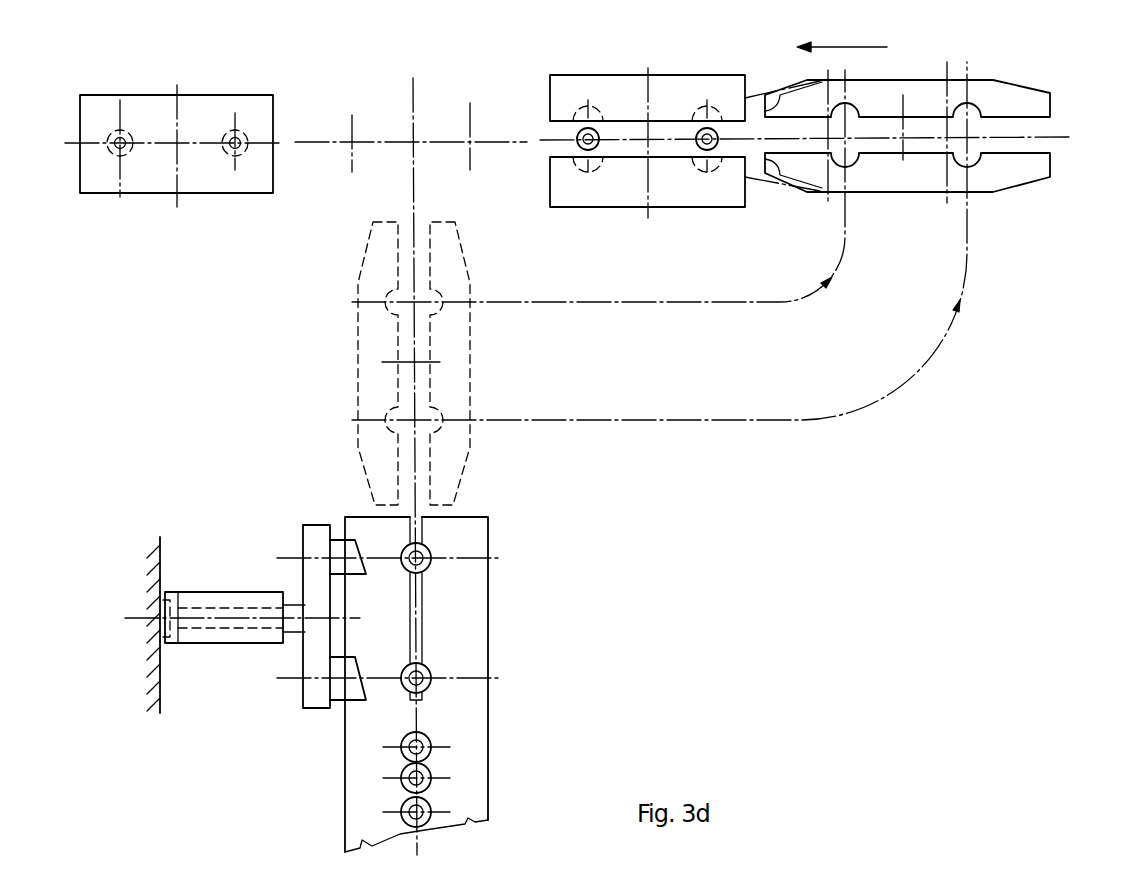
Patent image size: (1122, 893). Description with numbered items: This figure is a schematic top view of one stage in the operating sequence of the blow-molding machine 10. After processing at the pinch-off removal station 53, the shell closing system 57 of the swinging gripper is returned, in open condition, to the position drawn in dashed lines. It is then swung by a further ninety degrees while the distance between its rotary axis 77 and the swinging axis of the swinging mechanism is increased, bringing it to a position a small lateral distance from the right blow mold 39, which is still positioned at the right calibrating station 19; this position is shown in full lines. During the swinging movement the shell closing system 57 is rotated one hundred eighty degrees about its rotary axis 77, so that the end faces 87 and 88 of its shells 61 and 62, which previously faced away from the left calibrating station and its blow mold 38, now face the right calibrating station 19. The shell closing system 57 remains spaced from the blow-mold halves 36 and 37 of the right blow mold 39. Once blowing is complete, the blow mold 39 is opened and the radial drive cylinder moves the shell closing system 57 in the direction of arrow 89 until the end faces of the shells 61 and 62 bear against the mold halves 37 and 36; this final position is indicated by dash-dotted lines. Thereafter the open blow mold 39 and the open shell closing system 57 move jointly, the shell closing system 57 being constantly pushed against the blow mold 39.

The blow-molding machine 10 is at (209, 312).
The right calibrating station 19 is at (692, 146).
The mold half 36 is at (714, 86).
The mold half 37 is at (708, 192).
The blow mold 38 is at (213, 96).
The blow mold 39 is at (685, 144).
The pinch-off removal station 53 is at (304, 583).
The shell closing system 57 is at (357, 356).
The shell 61 is at (881, 98).
The shell 62 is at (888, 176).
The rotary axis 77 is at (413, 362).
The end face 87 is at (781, 170).
The end face 88 is at (777, 97).
The arrow 89 is at (852, 47).